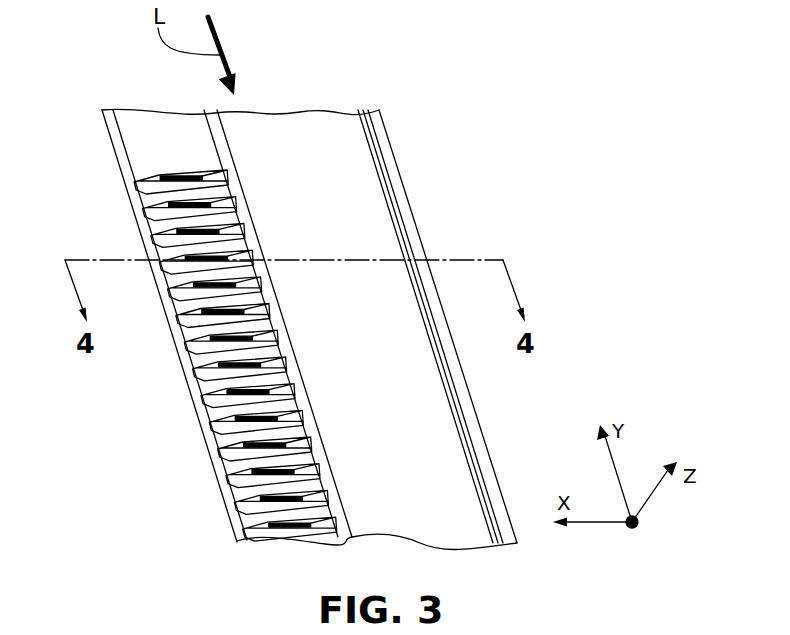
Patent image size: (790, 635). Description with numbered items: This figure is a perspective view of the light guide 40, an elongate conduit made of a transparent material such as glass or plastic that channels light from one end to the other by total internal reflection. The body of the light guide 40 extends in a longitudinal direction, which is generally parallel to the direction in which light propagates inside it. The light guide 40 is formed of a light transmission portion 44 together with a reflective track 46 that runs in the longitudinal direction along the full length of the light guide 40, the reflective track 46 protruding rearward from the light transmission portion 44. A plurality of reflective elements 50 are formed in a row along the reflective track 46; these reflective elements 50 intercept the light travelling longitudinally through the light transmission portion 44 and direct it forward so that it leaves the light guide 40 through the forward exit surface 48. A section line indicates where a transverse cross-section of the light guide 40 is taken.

The light guide 40 is at (563, 277).
The light transmission portion 44 is at (358, 167).
The reflective track 46 is at (167, 145).
The forward exit surface 48 is at (485, 432).
The reflective elements 50 is at (177, 318).